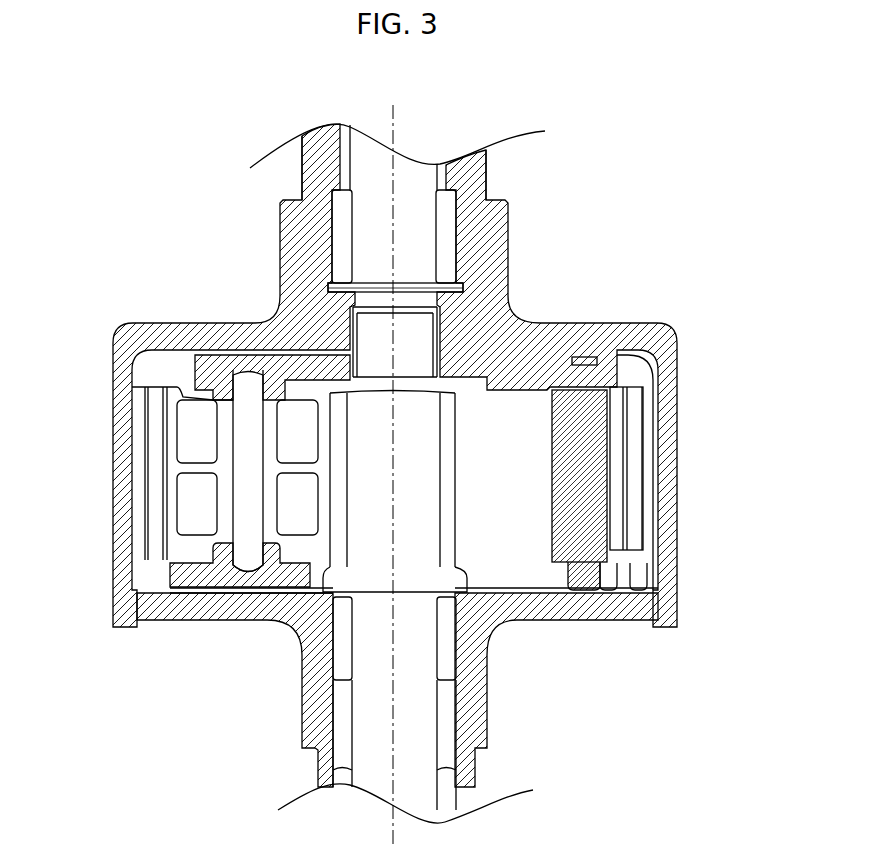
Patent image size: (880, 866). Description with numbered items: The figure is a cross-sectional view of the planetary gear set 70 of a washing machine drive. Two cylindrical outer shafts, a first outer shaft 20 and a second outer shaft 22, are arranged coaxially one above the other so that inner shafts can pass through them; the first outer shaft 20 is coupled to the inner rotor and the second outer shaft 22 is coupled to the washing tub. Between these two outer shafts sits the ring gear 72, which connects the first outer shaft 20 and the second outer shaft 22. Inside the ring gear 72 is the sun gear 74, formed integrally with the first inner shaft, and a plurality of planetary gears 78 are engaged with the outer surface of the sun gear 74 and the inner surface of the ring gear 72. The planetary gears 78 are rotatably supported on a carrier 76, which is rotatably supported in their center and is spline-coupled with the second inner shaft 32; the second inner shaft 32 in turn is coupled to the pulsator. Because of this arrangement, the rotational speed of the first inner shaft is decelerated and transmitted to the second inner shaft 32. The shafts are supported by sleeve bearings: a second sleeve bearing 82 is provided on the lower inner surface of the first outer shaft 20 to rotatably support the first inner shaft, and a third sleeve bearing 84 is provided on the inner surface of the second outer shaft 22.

The first outer shaft 20 is at (305, 715).
The second outer shaft 22 is at (480, 172).
The second inner shaft 32 is at (372, 230).
The planetary gear set 70 is at (595, 316).
The ring gear 72 is at (668, 322).
The sun gear 74 is at (416, 444).
The carrier 76 is at (532, 372).
The planetary gears 78 is at (197, 460).
The second sleeve bearing 82 is at (300, 648).
The third sleeve bearing 84 is at (450, 228).